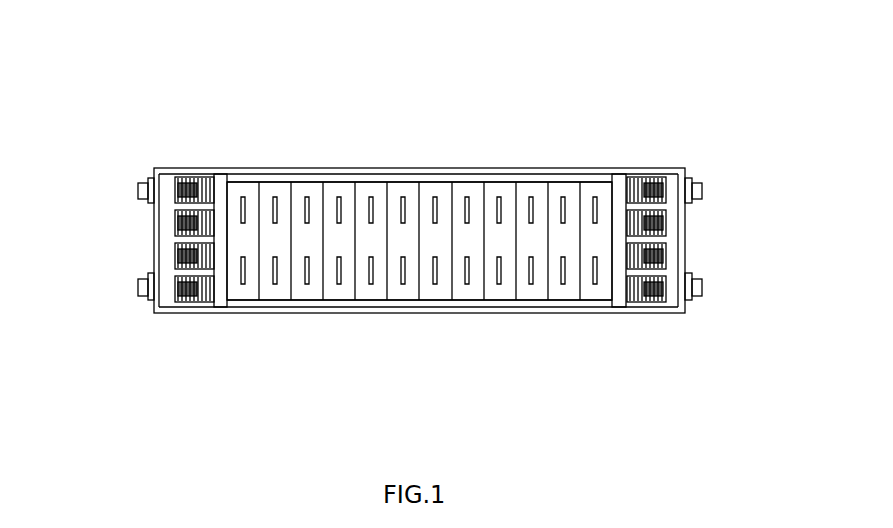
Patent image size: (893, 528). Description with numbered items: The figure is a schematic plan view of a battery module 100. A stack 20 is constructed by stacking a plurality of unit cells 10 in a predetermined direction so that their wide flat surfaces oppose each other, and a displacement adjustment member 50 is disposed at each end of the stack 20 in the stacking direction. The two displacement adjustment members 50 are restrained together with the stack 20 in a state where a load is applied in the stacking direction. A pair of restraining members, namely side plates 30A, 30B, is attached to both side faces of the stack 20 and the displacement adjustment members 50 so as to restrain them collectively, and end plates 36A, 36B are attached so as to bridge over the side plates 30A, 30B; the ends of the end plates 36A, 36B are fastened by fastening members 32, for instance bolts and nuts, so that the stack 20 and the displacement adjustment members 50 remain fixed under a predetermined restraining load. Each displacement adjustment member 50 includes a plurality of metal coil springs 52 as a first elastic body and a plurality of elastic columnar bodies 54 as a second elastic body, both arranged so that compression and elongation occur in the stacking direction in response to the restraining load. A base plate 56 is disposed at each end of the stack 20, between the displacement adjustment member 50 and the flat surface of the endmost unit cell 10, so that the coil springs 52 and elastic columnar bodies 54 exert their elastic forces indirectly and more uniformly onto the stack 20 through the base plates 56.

The battery module 100 is at (673, 47).
The unit cell 10 is at (497, 182).
The stack 20 is at (408, 300).
The restraining member 30A is at (358, 170).
The restraining member 30B is at (503, 313).
The fastening member 32 is at (140, 182).
The end plate 36A is at (154, 227).
The end plate 36B is at (686, 228).
The displacement adjustment member 50 is at (418, 242).
The coil spring 52 is at (204, 177).
The elastic columnar body 54 is at (183, 177).
The base plate 56 is at (221, 177).